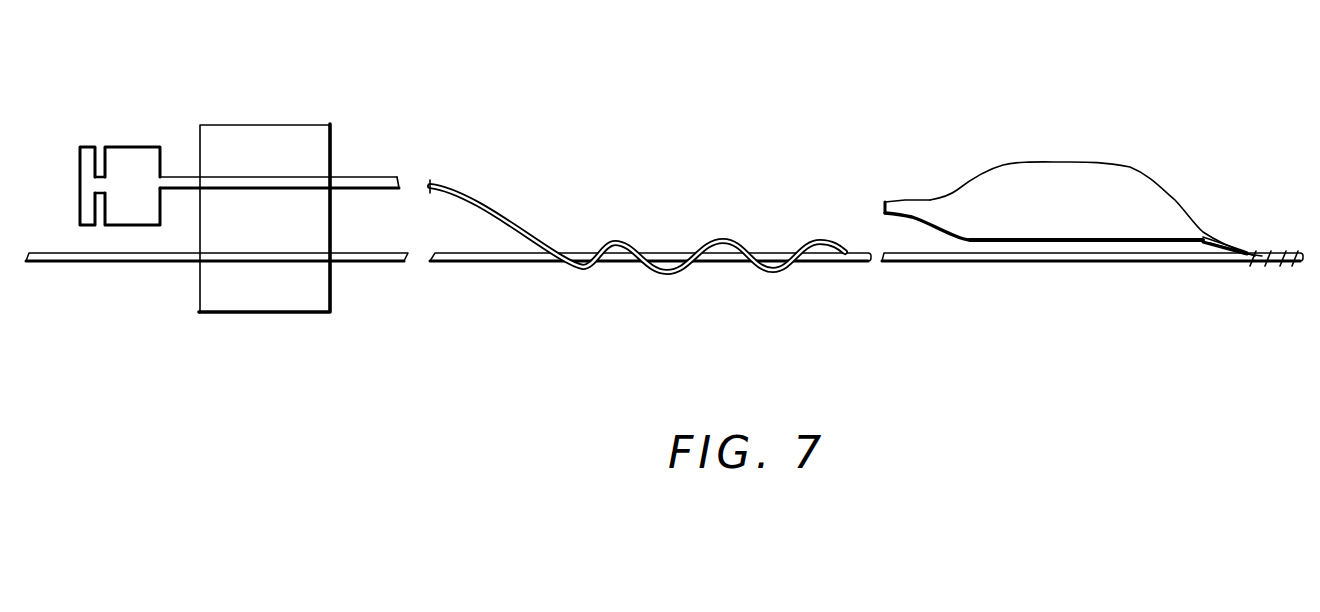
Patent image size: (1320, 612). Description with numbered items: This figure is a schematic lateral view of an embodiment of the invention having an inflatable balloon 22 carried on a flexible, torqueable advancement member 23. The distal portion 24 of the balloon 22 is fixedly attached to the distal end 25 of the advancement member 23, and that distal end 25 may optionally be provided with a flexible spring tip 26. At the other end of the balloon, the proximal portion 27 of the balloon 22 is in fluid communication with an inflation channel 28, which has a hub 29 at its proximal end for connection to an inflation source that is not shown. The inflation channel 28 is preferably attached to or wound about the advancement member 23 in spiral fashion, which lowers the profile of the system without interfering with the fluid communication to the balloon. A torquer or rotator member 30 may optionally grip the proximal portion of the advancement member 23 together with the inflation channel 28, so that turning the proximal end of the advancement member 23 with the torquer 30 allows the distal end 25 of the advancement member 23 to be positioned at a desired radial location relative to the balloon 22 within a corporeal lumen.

The inflatable balloon 22 is at (1083, 175).
The advancement member 23 is at (123, 263).
The distal portion of balloon 24 is at (1218, 240).
The distal end of advancement member 25 is at (1242, 263).
The flexible spring tip 26 is at (1292, 265).
The proximal portion of balloon 27 is at (957, 192).
The inflation channel 28 is at (680, 267).
The hub 29 is at (143, 150).
The torquer 30 is at (327, 315).